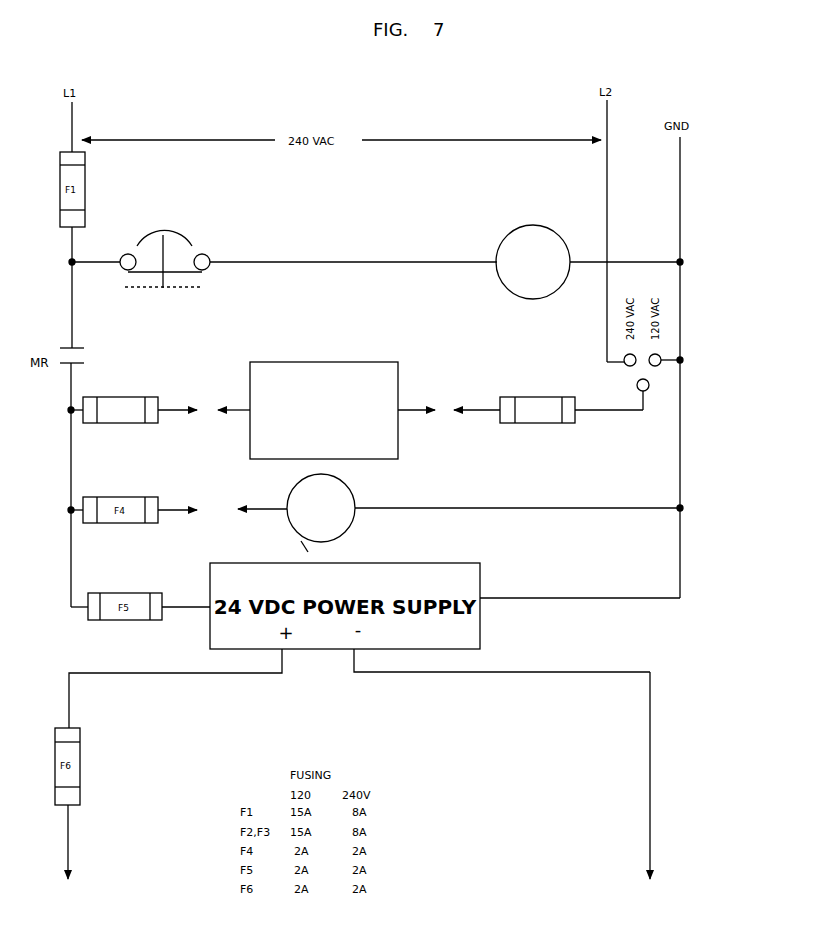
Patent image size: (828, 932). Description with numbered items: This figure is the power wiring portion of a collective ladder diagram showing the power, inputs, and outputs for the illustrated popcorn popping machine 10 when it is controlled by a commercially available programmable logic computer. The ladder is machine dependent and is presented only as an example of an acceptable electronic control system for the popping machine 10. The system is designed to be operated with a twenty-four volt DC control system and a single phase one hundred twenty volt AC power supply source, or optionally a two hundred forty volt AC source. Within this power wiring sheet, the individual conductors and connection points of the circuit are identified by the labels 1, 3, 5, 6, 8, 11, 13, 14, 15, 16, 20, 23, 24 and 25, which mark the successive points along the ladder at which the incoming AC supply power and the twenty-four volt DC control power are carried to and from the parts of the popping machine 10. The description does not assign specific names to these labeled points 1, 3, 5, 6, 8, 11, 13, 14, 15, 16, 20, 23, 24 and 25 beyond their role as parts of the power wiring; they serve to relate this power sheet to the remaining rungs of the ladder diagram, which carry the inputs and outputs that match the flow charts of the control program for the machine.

The push-pull emergency stop switch 1 is at (150, 240).
The master relay coil 3 is at (518, 262).
The induction heater power terminal 5 is at (308, 410).
The induction heater power terminal 6 is at (416, 401).
The voltage selector terminal 8 is at (612, 394).
The popping machine 10 is at (113, 401).
The power supply input line 11 is at (186, 597).
The fuse F4 output line 13 is at (179, 500).
The stir motor input line 14 is at (454, 513).
The fuse F3 output line 15 is at (177, 400).
The fuse F2 output line 16 is at (514, 407).
The 24 VDC negative output line 20 is at (631, 775).
The power supply negative terminal line 23 is at (502, 660).
The fuse F6 output line 24 is at (82, 842).
The power supply positive terminal line 25 is at (175, 688).